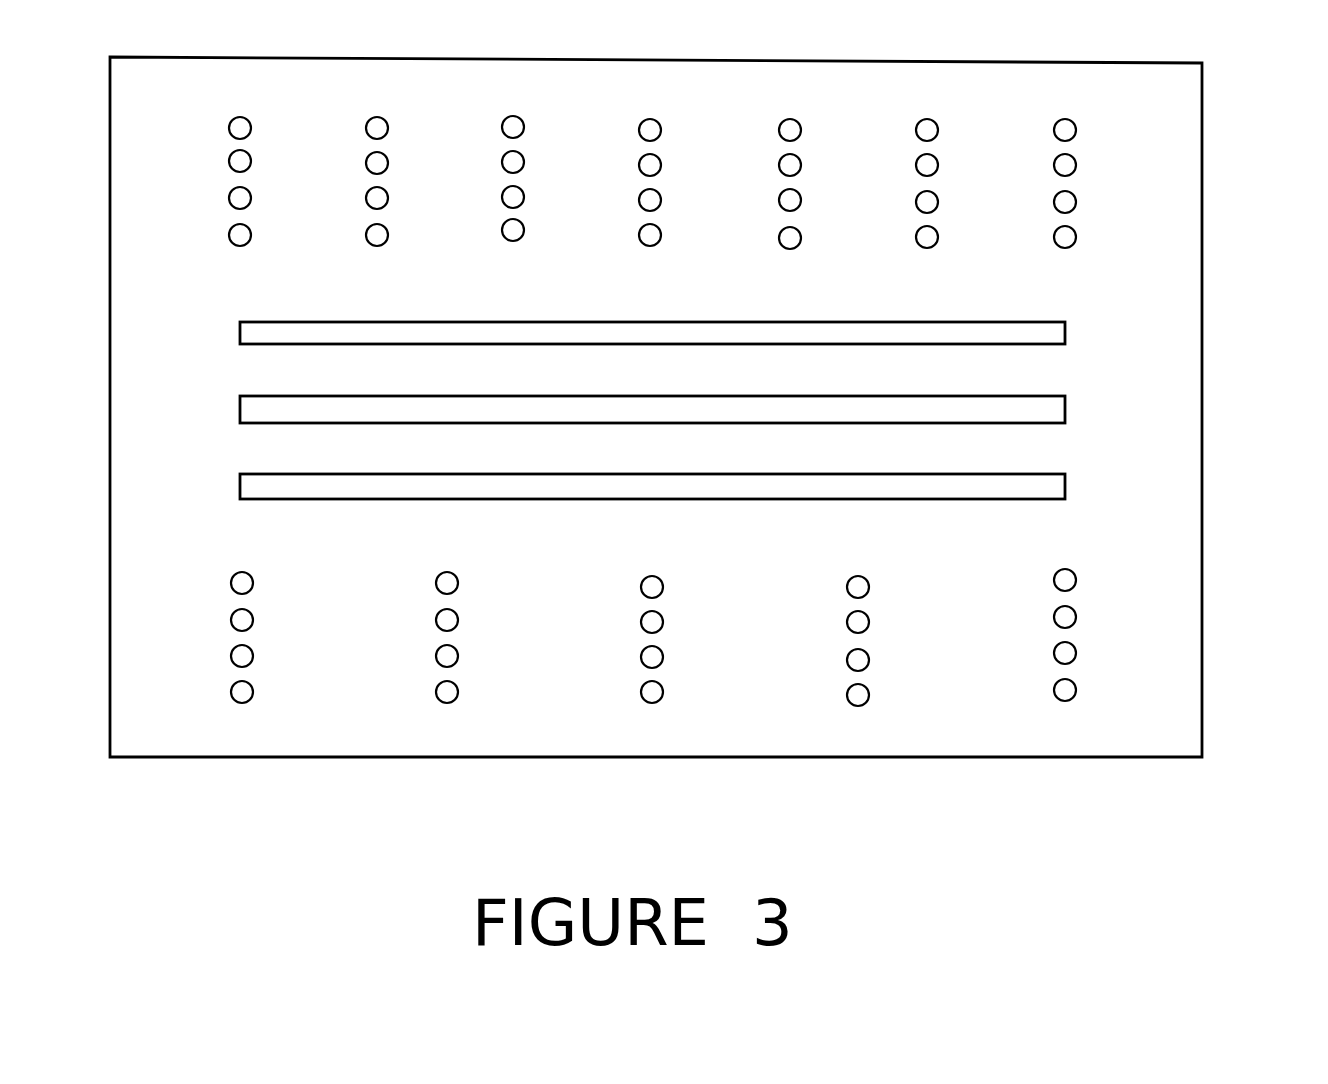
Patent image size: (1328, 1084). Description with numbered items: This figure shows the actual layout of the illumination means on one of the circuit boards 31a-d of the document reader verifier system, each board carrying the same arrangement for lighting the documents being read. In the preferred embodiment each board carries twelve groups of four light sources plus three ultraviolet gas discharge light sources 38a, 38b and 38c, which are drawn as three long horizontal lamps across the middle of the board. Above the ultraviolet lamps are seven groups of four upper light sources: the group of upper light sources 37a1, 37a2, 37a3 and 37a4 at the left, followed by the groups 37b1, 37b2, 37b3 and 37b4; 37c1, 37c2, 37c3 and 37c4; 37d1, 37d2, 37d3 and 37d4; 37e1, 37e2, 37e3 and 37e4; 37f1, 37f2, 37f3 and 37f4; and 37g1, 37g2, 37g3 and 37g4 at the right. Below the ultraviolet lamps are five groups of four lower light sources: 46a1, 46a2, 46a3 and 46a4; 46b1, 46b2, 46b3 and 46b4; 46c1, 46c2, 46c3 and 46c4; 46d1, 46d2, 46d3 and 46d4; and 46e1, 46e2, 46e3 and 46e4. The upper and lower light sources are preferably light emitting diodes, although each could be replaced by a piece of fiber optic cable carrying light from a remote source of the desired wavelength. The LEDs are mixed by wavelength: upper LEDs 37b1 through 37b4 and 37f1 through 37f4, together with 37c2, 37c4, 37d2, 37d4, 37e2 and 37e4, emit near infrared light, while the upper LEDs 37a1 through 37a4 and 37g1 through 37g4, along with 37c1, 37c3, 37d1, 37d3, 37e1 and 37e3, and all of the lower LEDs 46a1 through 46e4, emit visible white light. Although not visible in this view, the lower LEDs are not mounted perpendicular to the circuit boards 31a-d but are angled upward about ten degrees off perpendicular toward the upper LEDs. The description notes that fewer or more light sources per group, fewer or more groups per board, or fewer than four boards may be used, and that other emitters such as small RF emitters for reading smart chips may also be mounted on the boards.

The circuit boards 31a-d is at (1210, 252).
The ultraviolet light source 38a is at (1072, 323).
The ultraviolet light source 38b is at (1072, 403).
The ultraviolet light source 38c is at (1076, 485).
The upper light source 37a1 is at (253, 128).
The upper light source 37a2 is at (253, 161).
The upper light source 37a3 is at (253, 198).
The upper light source 37a4 is at (253, 235).
The upper light source 37b1 is at (390, 128).
The upper light source 37b2 is at (390, 163).
The upper light source 37b3 is at (390, 198).
The upper light source 37b4 is at (390, 235).
The upper light source 37c1 is at (526, 127).
The upper light source 37c2 is at (526, 162).
The upper light source 37c3 is at (526, 197).
The upper light source 37c4 is at (526, 230).
The upper light source 37d1 is at (663, 130).
The upper light source 37d2 is at (663, 165).
The upper light source 37d3 is at (663, 200).
The upper light source 37d4 is at (663, 235).
The upper light source 37e1 is at (803, 130).
The upper light source 37e2 is at (803, 165).
The upper light source 37e3 is at (803, 200).
The upper light source 37e4 is at (803, 238).
The upper light source 37f1 is at (940, 130).
The upper light source 37f2 is at (940, 165).
The upper light source 37f3 is at (940, 202).
The upper light source 37f4 is at (940, 237).
The upper light source 37g1 is at (1078, 130).
The upper light source 37g2 is at (1078, 165).
The upper light source 37g3 is at (1078, 202).
The upper light source 37g4 is at (1078, 237).
The lower light source 46a1 is at (255, 583).
The lower light source 46a2 is at (255, 620).
The lower light source 46a3 is at (255, 656).
The lower light source 46a4 is at (255, 692).
The lower light source 46b1 is at (460, 583).
The lower light source 46b2 is at (460, 620).
The lower light source 46b3 is at (460, 656).
The lower light source 46b4 is at (460, 692).
The lower light source 46c1 is at (665, 587).
The lower light source 46c2 is at (665, 622).
The lower light source 46c3 is at (665, 657).
The lower light source 46c4 is at (665, 692).
The lower light source 46d1 is at (871, 587).
The lower light source 46d2 is at (871, 622).
The lower light source 46d3 is at (871, 660).
The lower light source 46d4 is at (871, 695).
The lower light source 46e1 is at (1078, 580).
The lower light source 46e2 is at (1078, 617).
The lower light source 46e3 is at (1078, 653).
The lower light source 46e4 is at (1078, 690).